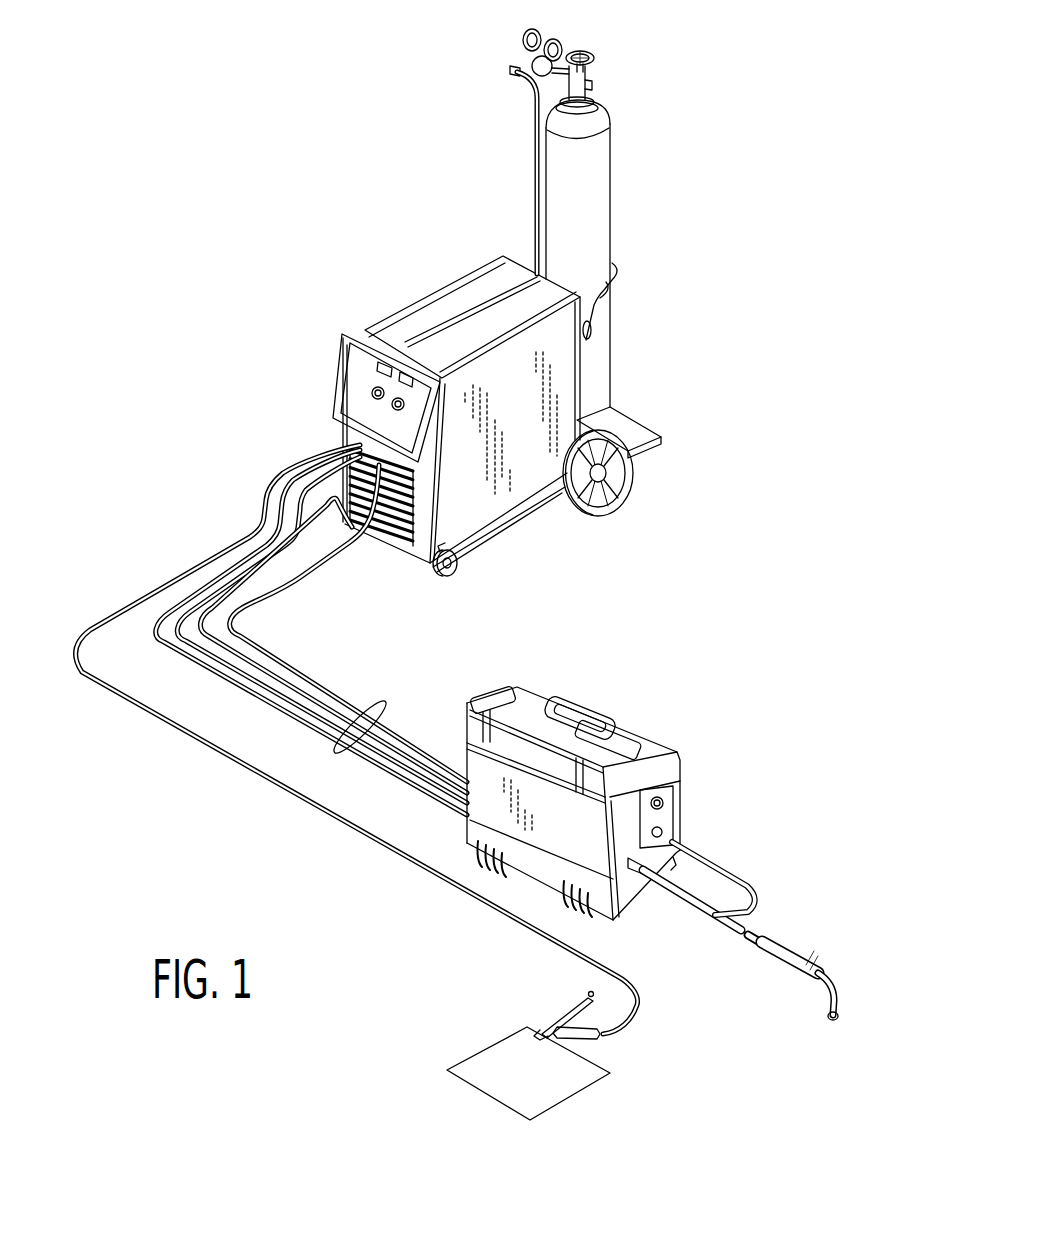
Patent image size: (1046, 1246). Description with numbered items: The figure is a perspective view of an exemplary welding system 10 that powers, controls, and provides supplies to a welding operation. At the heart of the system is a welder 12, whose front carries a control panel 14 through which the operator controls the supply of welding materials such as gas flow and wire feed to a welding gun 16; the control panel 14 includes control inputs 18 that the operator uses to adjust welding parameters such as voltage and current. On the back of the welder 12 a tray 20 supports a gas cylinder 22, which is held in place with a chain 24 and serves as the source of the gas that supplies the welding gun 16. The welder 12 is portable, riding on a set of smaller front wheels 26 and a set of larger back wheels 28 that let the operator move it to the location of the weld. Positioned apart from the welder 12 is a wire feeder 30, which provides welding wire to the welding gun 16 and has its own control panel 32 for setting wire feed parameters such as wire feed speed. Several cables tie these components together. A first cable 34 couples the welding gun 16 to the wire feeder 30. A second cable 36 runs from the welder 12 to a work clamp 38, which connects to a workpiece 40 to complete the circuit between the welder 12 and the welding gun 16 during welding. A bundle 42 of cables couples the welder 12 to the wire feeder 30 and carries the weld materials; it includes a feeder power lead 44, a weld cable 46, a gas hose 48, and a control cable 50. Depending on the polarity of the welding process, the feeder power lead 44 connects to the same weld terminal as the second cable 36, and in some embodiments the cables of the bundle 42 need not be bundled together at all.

The welding system 10 is at (291, 254).
The welder 12 is at (492, 282).
The control panel 14 is at (372, 365).
The welding gun 16 is at (787, 945).
The control inputs 18 is at (360, 390).
The tray 20 is at (642, 450).
The gas cylinder 22 is at (600, 187).
The chain 24 is at (617, 275).
The front wheels 26 is at (457, 577).
The back wheels 28 is at (607, 507).
The wire feeder 30 is at (566, 683).
The control panel 32 is at (667, 780).
The first cable 34 is at (693, 903).
The second cable 36 is at (102, 625).
The work clamp 38 is at (573, 1003).
The workpiece 40 is at (550, 1080).
The bundle of cables 42 is at (380, 703).
The feeder power lead 44 is at (162, 603).
The weld cable 46 is at (217, 583).
The gas hose 48 is at (245, 598).
The control cable 50 is at (270, 653).